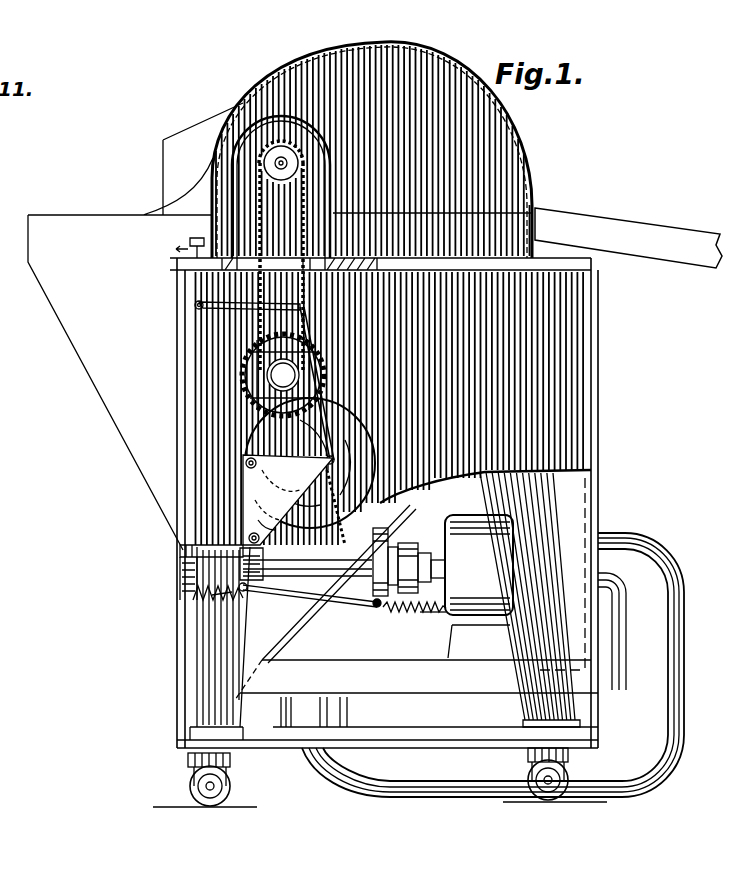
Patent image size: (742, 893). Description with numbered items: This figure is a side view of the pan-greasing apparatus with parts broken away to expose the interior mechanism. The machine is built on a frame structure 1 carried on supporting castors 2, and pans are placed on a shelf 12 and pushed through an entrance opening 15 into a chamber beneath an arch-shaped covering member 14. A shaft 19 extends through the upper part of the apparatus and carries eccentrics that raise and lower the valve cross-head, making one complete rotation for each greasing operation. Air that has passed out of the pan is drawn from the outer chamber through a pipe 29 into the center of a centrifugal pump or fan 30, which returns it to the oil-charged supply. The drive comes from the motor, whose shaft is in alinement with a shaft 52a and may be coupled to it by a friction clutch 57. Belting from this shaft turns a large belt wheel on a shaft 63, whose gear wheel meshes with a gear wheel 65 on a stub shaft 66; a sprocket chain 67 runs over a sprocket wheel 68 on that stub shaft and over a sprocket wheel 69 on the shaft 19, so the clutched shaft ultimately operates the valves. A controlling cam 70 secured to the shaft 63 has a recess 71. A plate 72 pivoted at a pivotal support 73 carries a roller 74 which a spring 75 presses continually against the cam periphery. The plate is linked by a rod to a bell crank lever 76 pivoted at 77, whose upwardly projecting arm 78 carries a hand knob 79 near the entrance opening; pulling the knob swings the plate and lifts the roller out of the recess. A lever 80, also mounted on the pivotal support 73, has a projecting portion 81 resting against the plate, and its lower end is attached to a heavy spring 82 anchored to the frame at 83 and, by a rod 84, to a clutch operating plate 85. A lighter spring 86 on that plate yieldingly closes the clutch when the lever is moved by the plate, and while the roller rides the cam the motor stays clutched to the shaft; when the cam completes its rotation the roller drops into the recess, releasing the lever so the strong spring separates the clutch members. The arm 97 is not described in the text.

The frame structure 1 is at (598, 362).
The supporting castors 2 is at (190, 771).
The shelf 12 is at (112, 213).
The arch-shaped covering member 14 is at (428, 30).
The entrance opening 15 is at (405, 510).
The shaft 19 is at (277, 160).
The pipe 29 is at (700, 688).
The centrifugal pump or fan 30 is at (595, 527).
The shaft 52a is at (325, 602).
The friction clutch 57 is at (392, 543).
The shaft 63 is at (305, 483).
The gear wheel 65 is at (247, 366).
The stub shaft 66 is at (270, 379).
The sprocket chain 67 is at (260, 193).
The sprocket wheel 68 is at (245, 388).
The sprocket wheel 69 is at (277, 140).
The controlling cam 70 is at (262, 431).
The recess 71 is at (245, 458).
The plate 72 is at (252, 506).
The pivotal support 73 is at (248, 534).
The roller 74 is at (246, 466).
The spring 75 is at (288, 500).
The bell crank lever 76 is at (215, 307).
The pivot 77 is at (195, 304).
The upwardly projecting arm 78 is at (185, 261).
The hand knob 79 is at (197, 236).
The lever 80 is at (240, 578).
The projecting portion 81 is at (195, 552).
The spring 82 is at (228, 598).
The connection 83 is at (192, 600).
The rod 84 is at (352, 598).
The clutch operating plate 85 is at (372, 608).
The spring 86 is at (424, 614).
The arm 97 is at (650, 232).